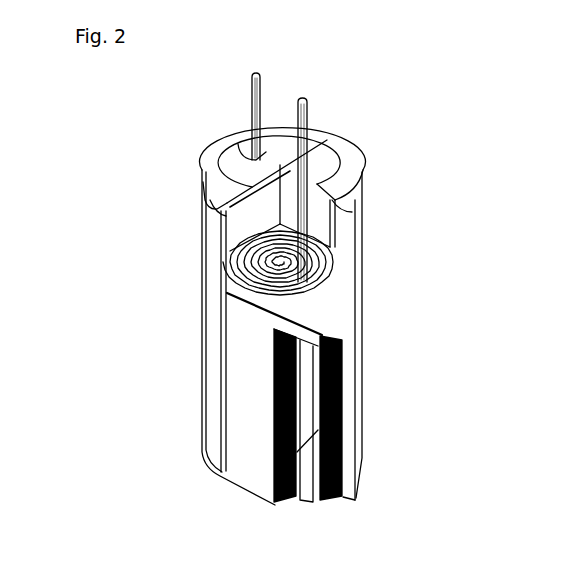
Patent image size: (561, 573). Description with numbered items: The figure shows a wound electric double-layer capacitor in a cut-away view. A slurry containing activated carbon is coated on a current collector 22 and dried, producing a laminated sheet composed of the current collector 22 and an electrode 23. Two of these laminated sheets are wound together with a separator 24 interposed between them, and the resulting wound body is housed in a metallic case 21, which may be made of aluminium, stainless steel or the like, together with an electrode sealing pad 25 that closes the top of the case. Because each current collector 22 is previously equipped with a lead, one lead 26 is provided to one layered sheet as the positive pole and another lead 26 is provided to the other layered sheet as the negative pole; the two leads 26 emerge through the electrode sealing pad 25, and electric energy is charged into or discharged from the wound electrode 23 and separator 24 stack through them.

The metallic case 21 is at (213, 157).
The current collector 22 is at (258, 373).
The electrode 23 is at (274, 468).
The separator 24 is at (345, 497).
The electrode sealing pad 25 is at (323, 163).
The lead 26 is at (255, 111).